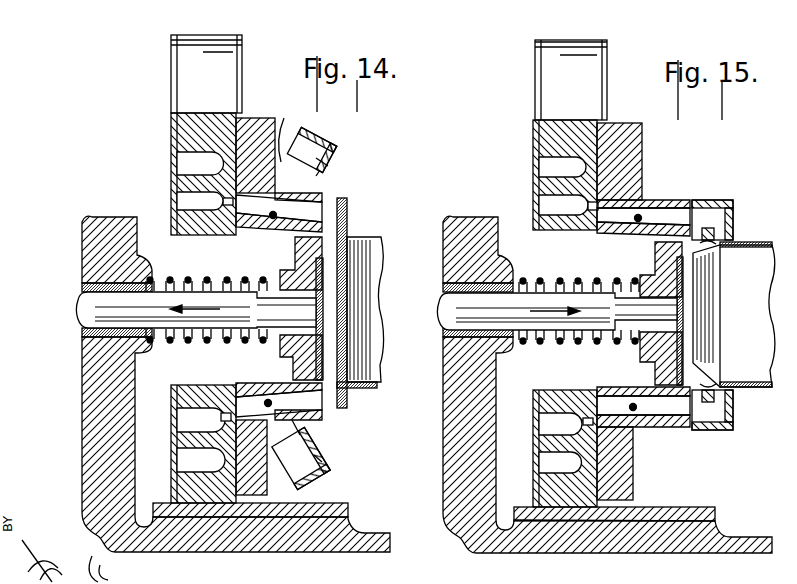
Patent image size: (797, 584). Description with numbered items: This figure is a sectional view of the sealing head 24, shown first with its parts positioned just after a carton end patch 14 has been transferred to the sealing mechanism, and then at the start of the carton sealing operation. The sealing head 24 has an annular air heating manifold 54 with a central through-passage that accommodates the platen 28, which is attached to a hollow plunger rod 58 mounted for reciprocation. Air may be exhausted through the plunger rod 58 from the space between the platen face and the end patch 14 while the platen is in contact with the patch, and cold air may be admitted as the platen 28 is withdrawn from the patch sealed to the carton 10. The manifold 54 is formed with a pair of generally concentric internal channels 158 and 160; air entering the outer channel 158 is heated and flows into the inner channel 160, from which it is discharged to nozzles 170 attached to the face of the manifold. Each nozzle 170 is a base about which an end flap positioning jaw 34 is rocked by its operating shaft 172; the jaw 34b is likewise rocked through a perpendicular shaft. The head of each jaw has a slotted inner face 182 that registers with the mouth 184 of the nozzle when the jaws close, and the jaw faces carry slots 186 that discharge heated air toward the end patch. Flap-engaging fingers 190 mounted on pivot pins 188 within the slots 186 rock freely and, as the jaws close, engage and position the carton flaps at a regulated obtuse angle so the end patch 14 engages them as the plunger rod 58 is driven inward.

In FIG. 15, the carton 10 is at (757, 244).
In FIG. 14, the end patch 14 is at (323, 277).
In FIG. 15, the end patch 14 is at (679, 295).
In FIG. 15, the sealing head 24 is at (522, 138).
In FIG. 14, the platen 28 is at (284, 353).
In FIG. 15, the platen 28 is at (653, 365).
In FIG. 14, the end flap positioning jaw 34 is at (326, 133).
In FIG. 15, the end flap positioning jaw 34 is at (685, 155).
In FIG. 14, the jaw 34b is at (327, 482).
In FIG. 15, the jaw 34b is at (668, 478).
In FIG. 14, the annular air heating manifold 54 is at (228, 82).
In FIG. 15, the hollow plunger rod 58 is at (562, 300).
In FIG. 14, the channel 158 is at (188, 162).
In FIG. 14, the channel 160 is at (195, 199).
In FIG. 14, the nozzle 170 is at (318, 192).
In FIG. 15, the nozzle 170 is at (641, 137).
In FIG. 14, the operating shaft 172 is at (274, 225).
In FIG. 14, the slotted inner face 182 is at (295, 135).
In FIG. 14, the mouth 184 is at (327, 200).
In FIG. 15, the mouth 184 is at (659, 218).
In FIG. 14, the slot 186 is at (328, 164).
In FIG. 14, the pivot pin 188 is at (320, 461).
In FIG. 14, the flap-engaging finger 190 is at (318, 445).